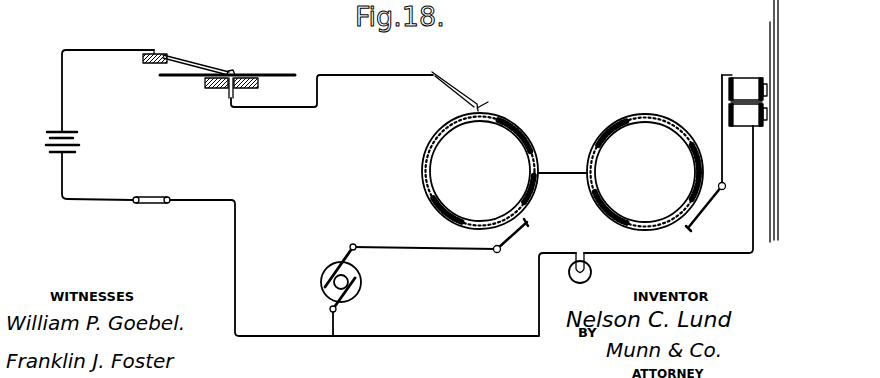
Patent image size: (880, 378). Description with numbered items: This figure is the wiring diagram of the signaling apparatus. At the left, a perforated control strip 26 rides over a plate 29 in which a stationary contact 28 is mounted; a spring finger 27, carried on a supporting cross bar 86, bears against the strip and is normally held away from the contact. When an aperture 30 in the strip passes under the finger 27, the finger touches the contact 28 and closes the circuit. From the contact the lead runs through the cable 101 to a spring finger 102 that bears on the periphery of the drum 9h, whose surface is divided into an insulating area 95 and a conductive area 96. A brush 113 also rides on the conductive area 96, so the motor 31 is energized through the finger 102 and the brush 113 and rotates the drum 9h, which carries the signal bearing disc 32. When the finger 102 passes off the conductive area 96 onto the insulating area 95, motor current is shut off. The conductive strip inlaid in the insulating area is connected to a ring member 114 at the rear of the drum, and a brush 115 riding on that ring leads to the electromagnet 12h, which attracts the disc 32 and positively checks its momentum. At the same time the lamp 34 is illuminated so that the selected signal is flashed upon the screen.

The supporting cross bar 86 is at (146, 65).
The spring finger 27 is at (198, 64).
The aperture 30 is at (237, 71).
The perforated control strip 26 is at (269, 74).
The plate 29 is at (259, 88).
The stationary contact 28 is at (228, 95).
The cable 101 is at (278, 108).
The spring finger 102 is at (460, 86).
The conductive area 96 is at (434, 130).
The insulating area 95 is at (513, 122).
The ring member 114 is at (689, 134).
The drum 9h is at (523, 140).
The brush 113 is at (506, 242).
The brush 115 is at (704, 208).
The motor 31 is at (324, 270).
The lamp 34 is at (592, 272).
The electromagnet 12h is at (741, 77).
The signal bearing disc 32 is at (769, 32).